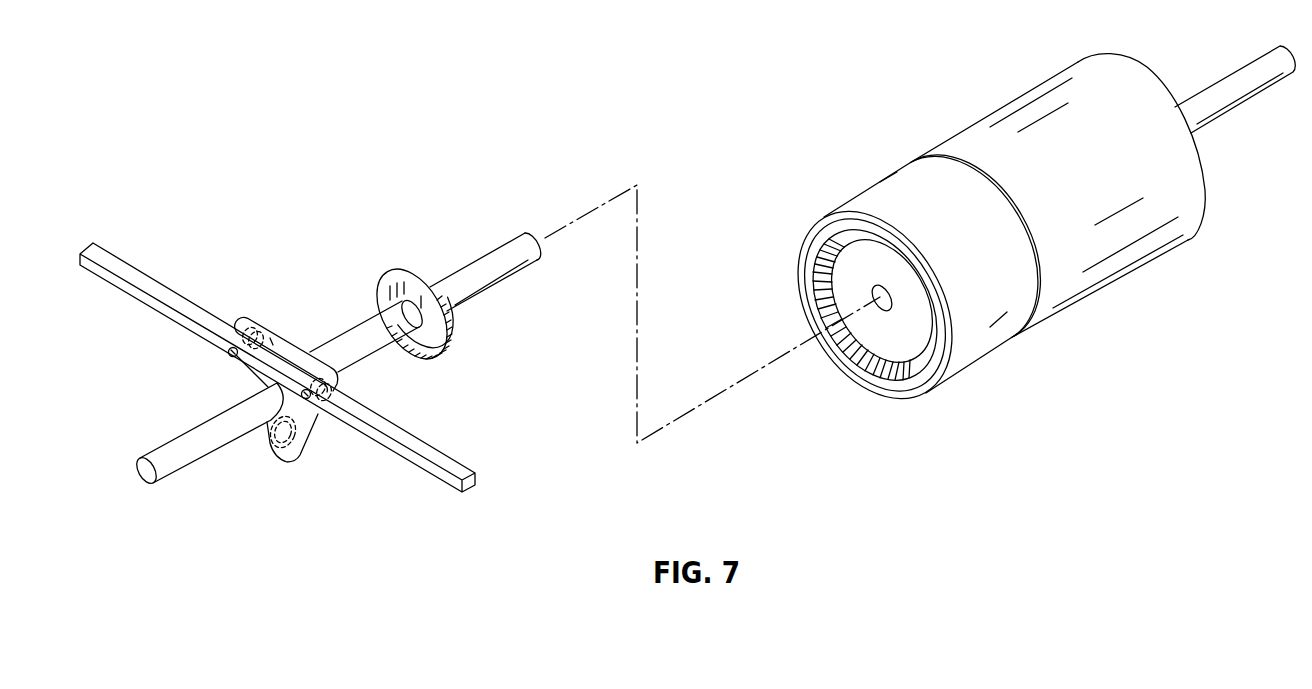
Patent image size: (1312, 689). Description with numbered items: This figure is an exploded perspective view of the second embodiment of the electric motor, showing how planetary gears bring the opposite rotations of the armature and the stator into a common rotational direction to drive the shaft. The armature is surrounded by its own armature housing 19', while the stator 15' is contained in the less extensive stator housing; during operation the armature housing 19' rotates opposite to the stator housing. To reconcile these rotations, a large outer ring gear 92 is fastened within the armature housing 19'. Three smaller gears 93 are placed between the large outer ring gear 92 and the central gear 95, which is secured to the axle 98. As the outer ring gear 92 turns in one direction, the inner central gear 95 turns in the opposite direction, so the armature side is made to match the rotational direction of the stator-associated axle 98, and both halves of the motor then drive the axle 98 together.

The stator 15' is at (1058, 196).
The armature housing 19' is at (903, 283).
The large outer ring gear 92 is at (882, 370).
The smaller gears 93 is at (283, 332).
The central gear 95 is at (427, 342).
The axle 98 is at (503, 267).